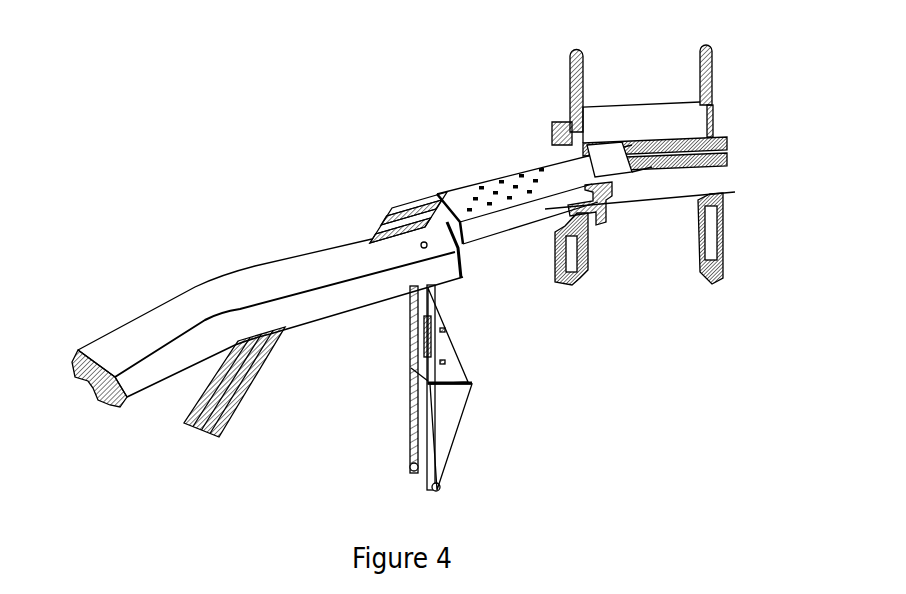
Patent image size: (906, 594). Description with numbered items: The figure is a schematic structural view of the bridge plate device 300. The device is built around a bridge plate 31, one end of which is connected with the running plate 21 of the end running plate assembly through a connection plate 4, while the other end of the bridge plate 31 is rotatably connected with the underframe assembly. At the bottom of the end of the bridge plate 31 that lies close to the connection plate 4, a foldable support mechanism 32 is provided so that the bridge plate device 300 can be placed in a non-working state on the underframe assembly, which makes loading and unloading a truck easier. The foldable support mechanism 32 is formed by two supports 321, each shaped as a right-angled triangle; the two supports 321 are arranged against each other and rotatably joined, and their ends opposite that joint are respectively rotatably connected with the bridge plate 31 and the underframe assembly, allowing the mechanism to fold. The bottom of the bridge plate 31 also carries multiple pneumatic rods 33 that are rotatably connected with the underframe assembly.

The bridge plate device 300 is at (345, 205).
The bridge plate 31 is at (247, 293).
The connection plate 4 is at (502, 188).
The running plate 21 is at (653, 190).
The foldable support mechanism 32 is at (388, 385).
The support 321 is at (447, 437).
The pneumatic rod 33 is at (223, 436).